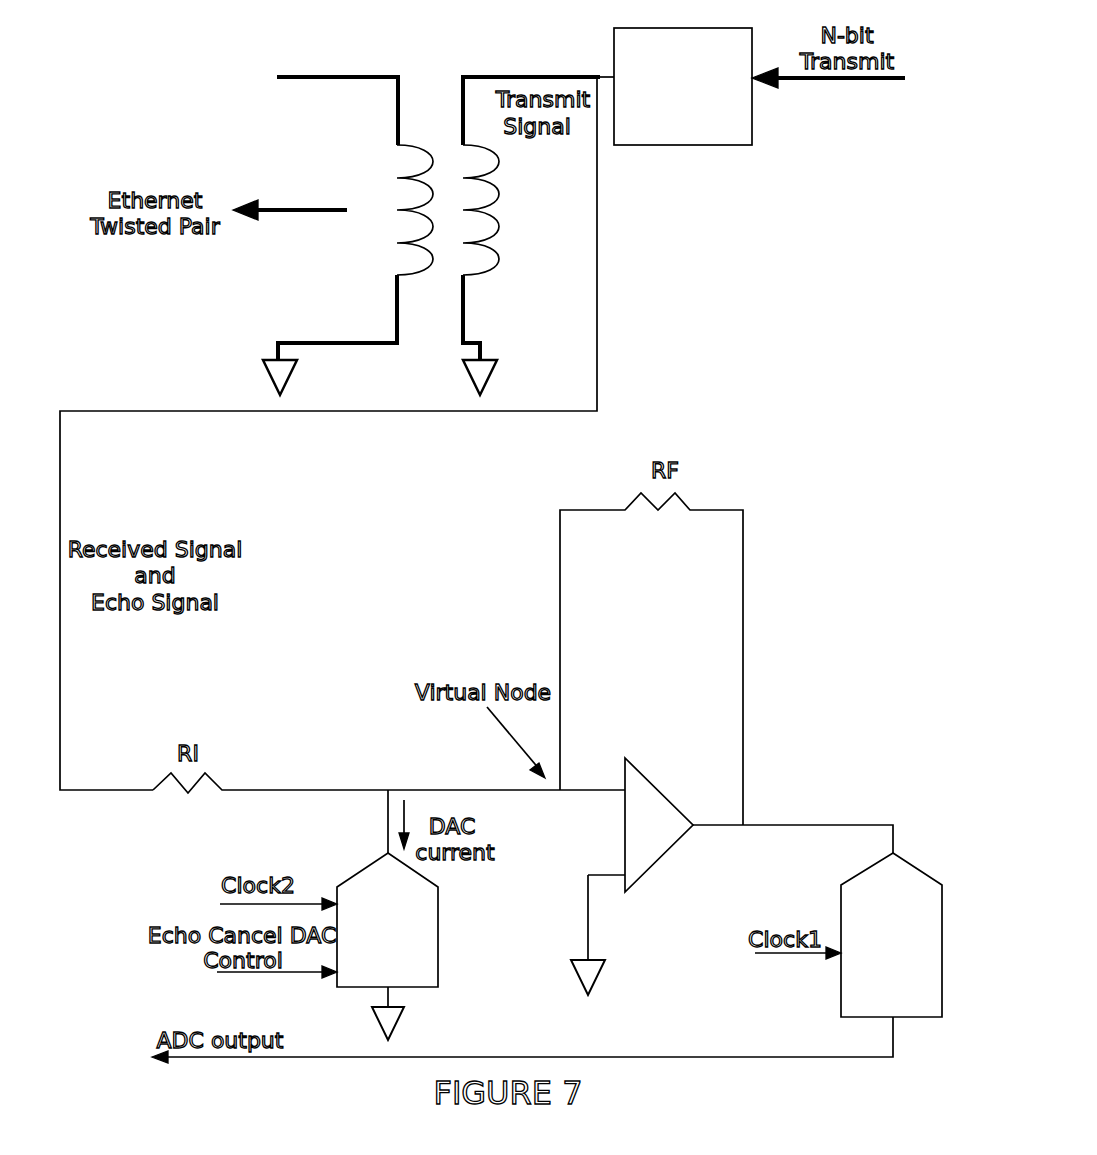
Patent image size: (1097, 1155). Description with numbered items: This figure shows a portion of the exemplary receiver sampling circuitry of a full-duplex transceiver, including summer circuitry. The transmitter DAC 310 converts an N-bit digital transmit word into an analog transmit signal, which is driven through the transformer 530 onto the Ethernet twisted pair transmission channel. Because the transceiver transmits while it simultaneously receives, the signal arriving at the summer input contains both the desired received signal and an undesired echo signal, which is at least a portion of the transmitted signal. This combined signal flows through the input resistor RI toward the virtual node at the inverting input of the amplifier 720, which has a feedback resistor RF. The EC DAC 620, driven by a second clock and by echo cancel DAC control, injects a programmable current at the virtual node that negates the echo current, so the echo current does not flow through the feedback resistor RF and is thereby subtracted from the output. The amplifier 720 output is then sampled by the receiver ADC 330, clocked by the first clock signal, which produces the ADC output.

The transformer 530 is at (350, 265).
The transmitter DAC 310 is at (664, 137).
The EC DAC 620 is at (369, 984).
The receiver ADC 330 is at (879, 982).
The amplifier 720 is at (630, 873).